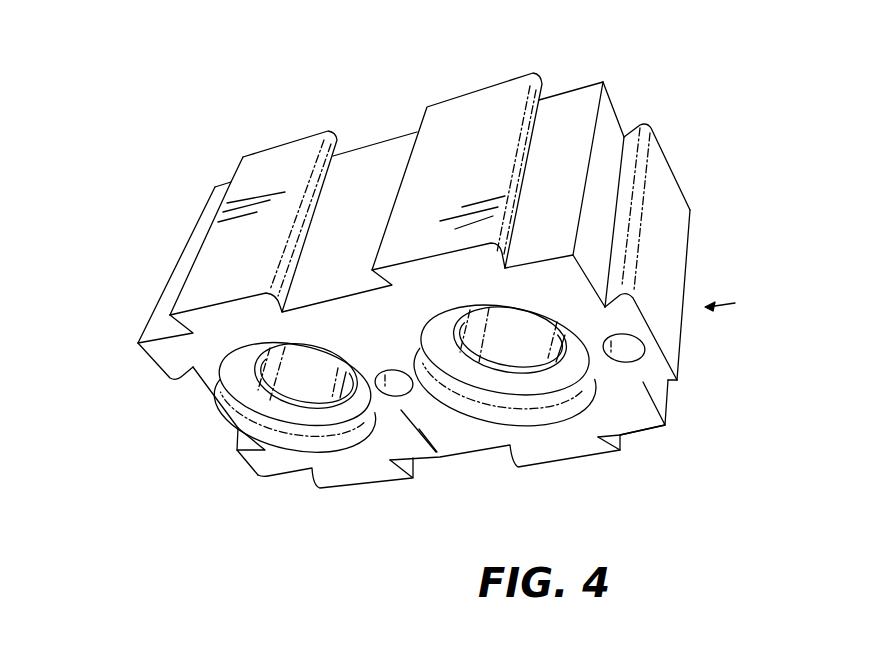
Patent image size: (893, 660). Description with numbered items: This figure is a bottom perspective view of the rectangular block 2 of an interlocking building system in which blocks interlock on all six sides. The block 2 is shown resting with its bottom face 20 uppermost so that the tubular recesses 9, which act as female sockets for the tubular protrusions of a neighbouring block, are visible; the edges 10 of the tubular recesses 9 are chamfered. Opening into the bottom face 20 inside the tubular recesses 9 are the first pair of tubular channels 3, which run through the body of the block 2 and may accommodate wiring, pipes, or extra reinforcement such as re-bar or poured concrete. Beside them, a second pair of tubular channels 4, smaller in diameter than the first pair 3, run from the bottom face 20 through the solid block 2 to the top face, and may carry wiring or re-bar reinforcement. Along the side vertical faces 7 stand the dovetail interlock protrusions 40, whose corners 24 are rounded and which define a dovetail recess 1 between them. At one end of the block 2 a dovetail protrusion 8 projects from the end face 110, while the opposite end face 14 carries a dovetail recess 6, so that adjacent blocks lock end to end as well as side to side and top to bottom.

The dovetail recess 1 is at (382, 138).
The rectangular block 2 is at (731, 301).
The first pair of tubular channels 3 is at (410, 358).
The second pair of tubular channels 4 is at (509, 364).
The dovetail recess 6 is at (220, 398).
The side vertical faces 7 is at (190, 252).
The dovetail protrusion 8 is at (673, 170).
The tubular recesses 9 is at (280, 422).
The edges of the tubular recesses 10 is at (307, 442).
The end face 14 is at (148, 360).
The bottom face 20 is at (337, 347).
The corners of the dovetail protrusions 24 is at (338, 132).
The dovetail interlock protrusions 40 is at (282, 155).
The end face 110 is at (615, 102).